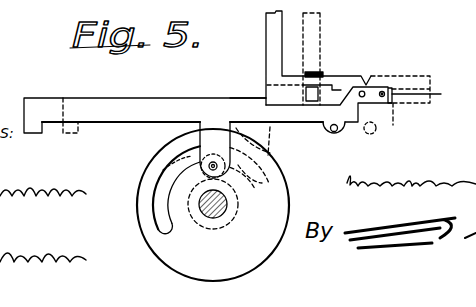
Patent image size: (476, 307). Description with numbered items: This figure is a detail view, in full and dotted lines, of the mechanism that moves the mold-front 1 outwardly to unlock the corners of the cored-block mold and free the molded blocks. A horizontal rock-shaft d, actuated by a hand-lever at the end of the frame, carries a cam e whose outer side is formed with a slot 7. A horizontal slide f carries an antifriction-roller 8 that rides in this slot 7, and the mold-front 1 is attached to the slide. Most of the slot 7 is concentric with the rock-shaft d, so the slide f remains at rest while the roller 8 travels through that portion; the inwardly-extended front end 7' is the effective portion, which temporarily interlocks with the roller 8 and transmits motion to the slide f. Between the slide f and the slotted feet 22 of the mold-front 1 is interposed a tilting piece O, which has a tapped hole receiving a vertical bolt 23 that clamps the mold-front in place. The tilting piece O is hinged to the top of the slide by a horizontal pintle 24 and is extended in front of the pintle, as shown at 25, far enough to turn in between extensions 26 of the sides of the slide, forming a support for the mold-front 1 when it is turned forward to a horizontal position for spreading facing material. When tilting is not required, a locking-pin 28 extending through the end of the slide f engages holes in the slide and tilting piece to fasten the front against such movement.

The mold-front 1 is at (266, 40).
The horizontal slide f is at (150, 110).
The tilting piece O is at (266, 97).
The slotted feet 22 is at (345, 76).
The vertical bolt 23 is at (318, 72).
The horizontal pintle 24 is at (364, 92).
The forward extension of tilting piece 25 is at (388, 93).
The extensions of the slide sides 26 is at (393, 104).
The locking-pin 28 is at (427, 97).
The cam e is at (138, 223).
The rock-shaft d is at (217, 211).
The antifriction-roller 8 is at (205, 162).
The slot 7 is at (156, 189).
The inwardly-extended front end of slot 7' is at (250, 179).